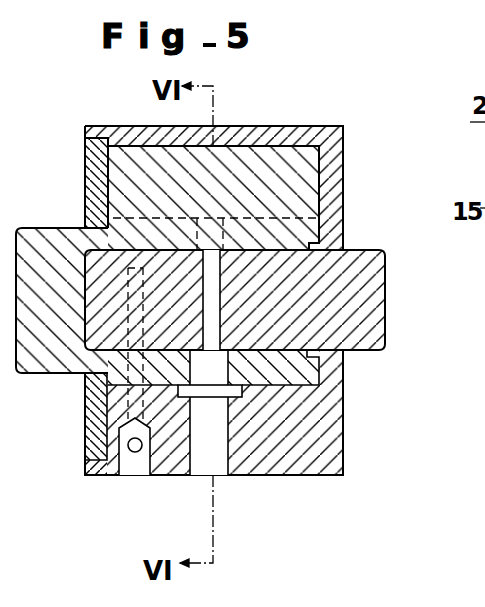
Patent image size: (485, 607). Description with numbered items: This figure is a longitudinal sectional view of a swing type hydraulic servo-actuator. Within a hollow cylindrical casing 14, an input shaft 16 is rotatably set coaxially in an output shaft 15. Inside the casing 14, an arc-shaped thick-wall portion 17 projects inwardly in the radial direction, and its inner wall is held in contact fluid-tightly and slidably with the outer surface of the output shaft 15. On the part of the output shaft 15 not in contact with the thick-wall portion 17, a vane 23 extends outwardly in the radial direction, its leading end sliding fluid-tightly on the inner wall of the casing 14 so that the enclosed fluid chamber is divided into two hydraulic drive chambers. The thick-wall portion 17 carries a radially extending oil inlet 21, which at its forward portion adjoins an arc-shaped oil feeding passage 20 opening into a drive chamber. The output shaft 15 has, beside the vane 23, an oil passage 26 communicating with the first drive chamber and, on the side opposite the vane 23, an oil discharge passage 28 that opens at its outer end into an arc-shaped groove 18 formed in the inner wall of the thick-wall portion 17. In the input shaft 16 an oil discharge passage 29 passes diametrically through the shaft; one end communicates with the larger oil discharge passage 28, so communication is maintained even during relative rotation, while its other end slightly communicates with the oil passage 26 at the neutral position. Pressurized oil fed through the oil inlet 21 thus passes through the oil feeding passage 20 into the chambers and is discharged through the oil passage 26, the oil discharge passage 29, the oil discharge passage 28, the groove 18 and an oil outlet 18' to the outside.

The casing 14 is at (332, 184).
The output shaft 15 is at (46, 248).
The input shaft 16 is at (369, 305).
The thick-wall portion 17 is at (320, 403).
The groove 18 is at (234, 415).
The oil outlet 18' is at (236, 465).
The oil feeding passage 20 is at (128, 408).
The oil inlet 21 is at (133, 467).
The vane 23 is at (257, 173).
The oil passage 26 is at (197, 240).
The oil discharge passage 28 is at (203, 363).
The oil discharge passage 29 is at (215, 288).